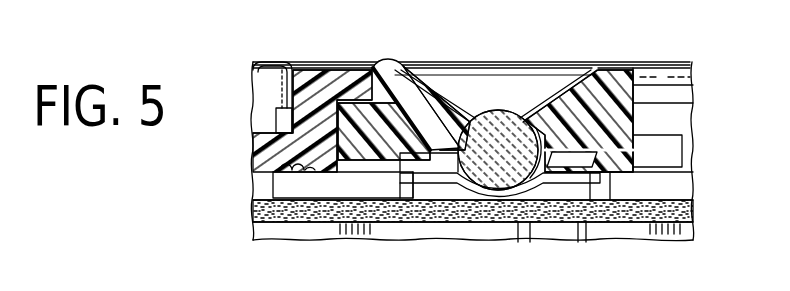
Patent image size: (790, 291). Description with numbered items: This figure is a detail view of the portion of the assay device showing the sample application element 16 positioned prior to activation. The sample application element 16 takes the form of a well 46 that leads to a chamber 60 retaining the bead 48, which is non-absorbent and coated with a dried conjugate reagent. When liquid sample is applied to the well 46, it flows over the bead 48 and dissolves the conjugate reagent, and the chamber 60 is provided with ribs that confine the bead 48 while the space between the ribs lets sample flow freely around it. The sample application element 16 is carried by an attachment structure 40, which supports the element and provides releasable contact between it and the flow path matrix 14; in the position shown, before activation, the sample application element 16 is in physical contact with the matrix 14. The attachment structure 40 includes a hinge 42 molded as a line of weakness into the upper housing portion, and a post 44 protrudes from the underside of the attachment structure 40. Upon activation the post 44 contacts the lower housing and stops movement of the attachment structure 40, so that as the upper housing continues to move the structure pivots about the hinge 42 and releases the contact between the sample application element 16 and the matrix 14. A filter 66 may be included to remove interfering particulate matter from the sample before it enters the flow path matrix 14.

The flow path matrix 14 is at (337, 224).
The sample application element 16 is at (399, 62).
The attachment structure 40 is at (634, 66).
The hinge 42 is at (317, 170).
The post 44 is at (586, 243).
The well 46 is at (547, 104).
The bead 48 is at (503, 130).
The chamber 60 is at (512, 200).
The filter 66 is at (433, 193).